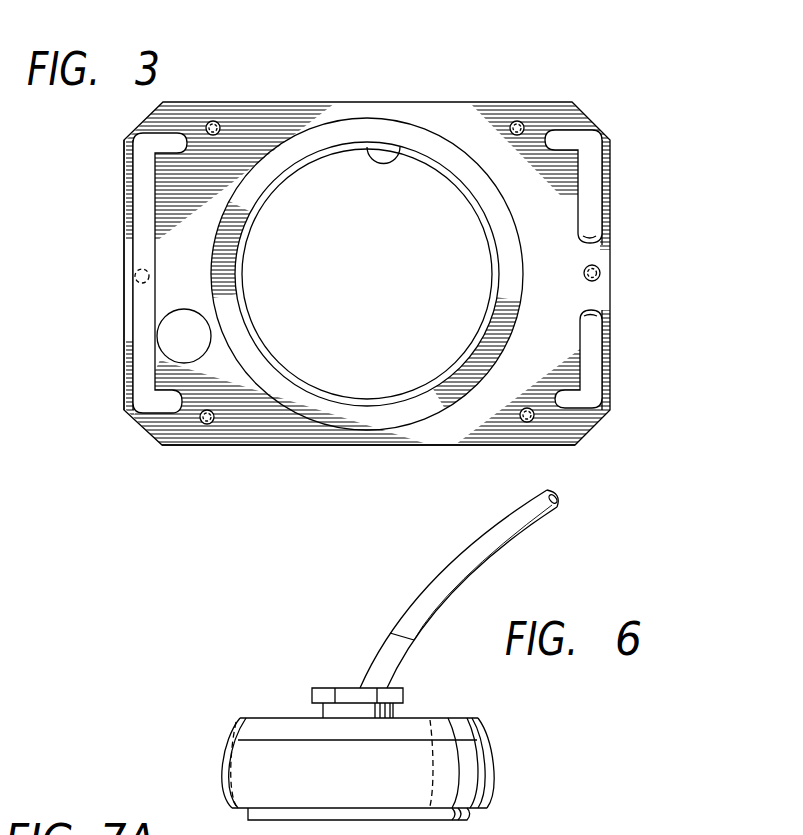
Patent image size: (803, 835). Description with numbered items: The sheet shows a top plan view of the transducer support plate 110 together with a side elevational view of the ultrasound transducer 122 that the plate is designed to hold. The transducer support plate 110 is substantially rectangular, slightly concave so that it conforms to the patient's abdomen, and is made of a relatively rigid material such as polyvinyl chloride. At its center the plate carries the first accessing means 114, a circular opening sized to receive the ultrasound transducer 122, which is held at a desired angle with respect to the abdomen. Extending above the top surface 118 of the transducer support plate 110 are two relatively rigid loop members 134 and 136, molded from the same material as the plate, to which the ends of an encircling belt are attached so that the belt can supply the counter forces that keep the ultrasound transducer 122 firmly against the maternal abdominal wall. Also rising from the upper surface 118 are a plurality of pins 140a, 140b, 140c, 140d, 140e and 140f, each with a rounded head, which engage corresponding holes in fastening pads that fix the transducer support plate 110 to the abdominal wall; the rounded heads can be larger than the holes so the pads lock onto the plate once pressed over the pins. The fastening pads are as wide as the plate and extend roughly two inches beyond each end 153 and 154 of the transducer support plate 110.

In FIG. 3, the transducer support plate 110 is at (615, 90).
In FIG. 3, the first accessing means 114 is at (399, 147).
In FIG. 3, the top surface 118 is at (368, 448).
In FIG. 6, the ultrasound transducer 122 is at (226, 680).
In FIG. 3, the loop member 134 is at (138, 342).
In FIG. 3, the loop member 136 is at (592, 222).
In FIG. 3, the pin 140a is at (214, 121).
In FIG. 3, the pin 140b is at (144, 284).
In FIG. 3, the pin 140c is at (207, 425).
In FIG. 3, the pin 140d is at (527, 423).
In FIG. 3, the pin 140e is at (602, 273).
In FIG. 3, the pin 140f is at (519, 121).
In FIG. 3, the end of transducer support plate 153 is at (123, 225).
In FIG. 3, the end of transducer support plate 154 is at (613, 345).